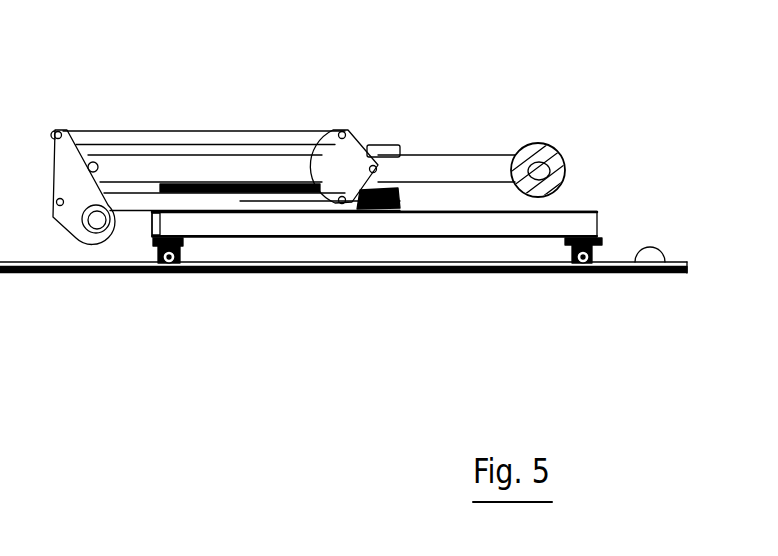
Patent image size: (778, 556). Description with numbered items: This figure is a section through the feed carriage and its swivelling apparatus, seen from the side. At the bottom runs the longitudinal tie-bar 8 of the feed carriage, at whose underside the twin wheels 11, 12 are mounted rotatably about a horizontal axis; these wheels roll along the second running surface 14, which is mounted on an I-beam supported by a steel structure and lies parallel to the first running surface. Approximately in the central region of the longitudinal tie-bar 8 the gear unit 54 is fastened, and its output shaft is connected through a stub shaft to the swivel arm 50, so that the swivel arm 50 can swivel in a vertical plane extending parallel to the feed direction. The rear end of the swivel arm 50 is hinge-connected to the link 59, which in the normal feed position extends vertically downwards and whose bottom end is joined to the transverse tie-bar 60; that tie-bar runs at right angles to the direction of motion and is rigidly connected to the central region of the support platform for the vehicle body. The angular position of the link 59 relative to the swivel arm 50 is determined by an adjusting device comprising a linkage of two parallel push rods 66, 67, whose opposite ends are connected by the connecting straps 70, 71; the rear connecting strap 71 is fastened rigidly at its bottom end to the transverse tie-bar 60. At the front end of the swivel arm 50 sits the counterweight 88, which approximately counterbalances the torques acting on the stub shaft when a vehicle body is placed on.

The longitudinal tie-bar 8 is at (458, 228).
The twin wheel 11 is at (174, 275).
The twin wheel 12 is at (581, 275).
The second running surface 14 is at (672, 274).
The swivel arm 50 is at (462, 165).
The gear unit 54 is at (380, 142).
The link 59 is at (160, 128).
The transverse tie-bar 60 is at (78, 248).
The push rod 66 is at (195, 128).
The push rod 67 is at (260, 204).
The connecting strap 70 is at (343, 162).
The connecting strap 71 is at (58, 168).
The counterweight 88 is at (552, 143).